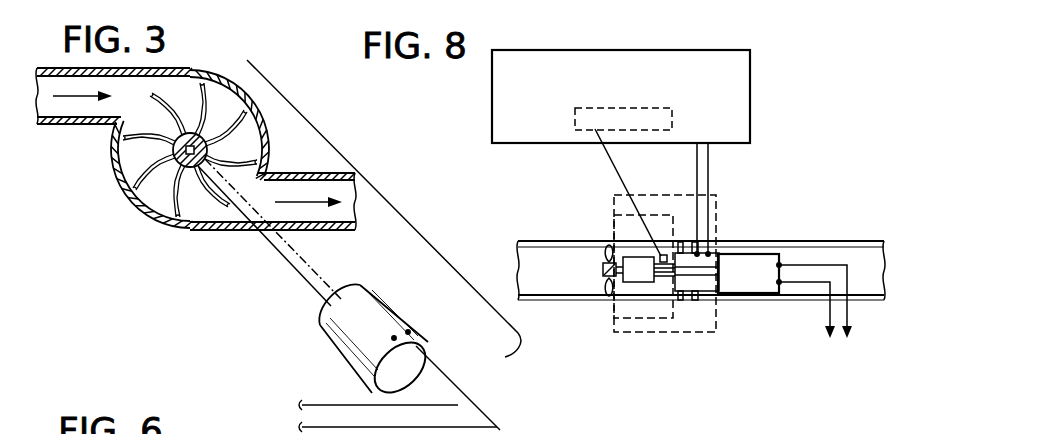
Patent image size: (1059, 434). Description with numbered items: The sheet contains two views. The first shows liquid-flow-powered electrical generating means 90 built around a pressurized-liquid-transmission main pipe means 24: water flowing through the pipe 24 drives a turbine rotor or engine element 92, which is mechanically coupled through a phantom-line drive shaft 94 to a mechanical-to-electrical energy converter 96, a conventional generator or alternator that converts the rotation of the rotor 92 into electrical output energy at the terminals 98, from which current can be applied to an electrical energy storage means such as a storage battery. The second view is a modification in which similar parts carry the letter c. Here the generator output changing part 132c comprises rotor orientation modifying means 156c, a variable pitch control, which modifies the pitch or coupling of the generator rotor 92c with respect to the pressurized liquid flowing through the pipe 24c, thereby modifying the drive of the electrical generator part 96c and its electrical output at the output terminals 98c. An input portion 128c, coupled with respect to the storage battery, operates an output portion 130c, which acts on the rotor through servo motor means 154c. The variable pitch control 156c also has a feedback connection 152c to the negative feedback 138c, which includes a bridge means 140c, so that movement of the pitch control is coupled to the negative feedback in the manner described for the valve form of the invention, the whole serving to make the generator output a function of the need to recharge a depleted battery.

In FIG. 3, the pressurized-liquid-transmission main pipe means 24 is at (66, 124).
In FIG. 3, the turbine rotor 92 is at (138, 162).
In FIG. 3, the drive shaft 94 is at (270, 256).
In FIG. 3, the mechanical-to-electrical energy converter 96 is at (312, 349).
In FIG. 3, the output terminals 98 is at (408, 332).
In FIG. 3, the pressurized-liquid-flow-powered electrical generating means 90 is at (421, 234).
In FIG. 8, the pipe 24c is at (545, 300).
In FIG. 8, the generator rotor 92c is at (600, 255).
In FIG. 8, the electrical generator part 96c is at (742, 306).
In FIG. 8, the output terminals 98c is at (779, 284).
In FIG. 8, the input portion 128c is at (748, 50).
In FIG. 8, the output portion 130c is at (720, 196).
In FIG. 8, the generator output changing part 132c is at (630, 315).
In FIG. 8, the negative feedback 138c is at (590, 159).
In FIG. 8, the bridge means 140c is at (607, 108).
In FIG. 8, the feedback connection 152c is at (602, 175).
In FIG. 8, the servo motor means 154c is at (730, 256).
In FIG. 8, the rotor orientation modifying means 156c is at (668, 292).